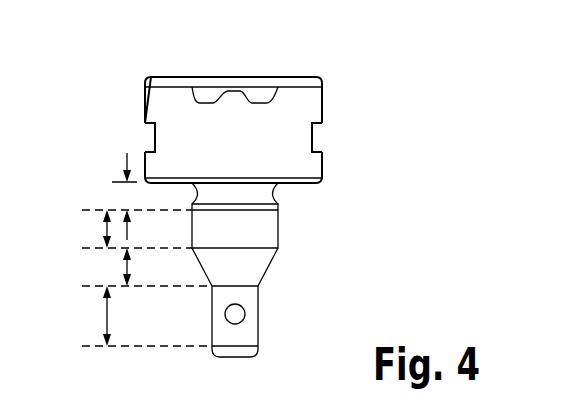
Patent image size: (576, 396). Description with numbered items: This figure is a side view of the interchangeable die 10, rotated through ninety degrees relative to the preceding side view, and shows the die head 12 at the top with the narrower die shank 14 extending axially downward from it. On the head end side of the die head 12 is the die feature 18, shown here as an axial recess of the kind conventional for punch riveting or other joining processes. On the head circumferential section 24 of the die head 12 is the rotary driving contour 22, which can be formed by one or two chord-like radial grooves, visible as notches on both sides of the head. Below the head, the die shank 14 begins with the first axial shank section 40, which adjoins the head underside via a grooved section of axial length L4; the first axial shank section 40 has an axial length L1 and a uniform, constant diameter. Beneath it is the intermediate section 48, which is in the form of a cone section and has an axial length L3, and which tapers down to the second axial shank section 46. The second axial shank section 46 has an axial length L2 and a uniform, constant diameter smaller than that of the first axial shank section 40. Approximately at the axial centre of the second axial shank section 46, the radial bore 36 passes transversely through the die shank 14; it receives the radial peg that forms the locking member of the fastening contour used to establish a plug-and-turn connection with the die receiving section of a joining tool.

The interchangeable die 10 is at (372, 63).
The die head 12 is at (334, 107).
The die shank 14 is at (277, 288).
The die feature 18 is at (205, 100).
The rotary driving contour 22 is at (157, 133).
The head circumferential section 24 is at (145, 100).
The radial bore 36 is at (236, 314).
The first axial shank section 40 is at (268, 238).
The second axial shank section 46 is at (250, 337).
The intermediate section 48 is at (252, 262).
The axial length of the first axial shank section L1 is at (100, 229).
The axial length of the second axial shank section L2 is at (105, 316).
The axial length of the intermediate section L3 is at (122, 266).
The axial length of the grooved section L4 is at (122, 158).